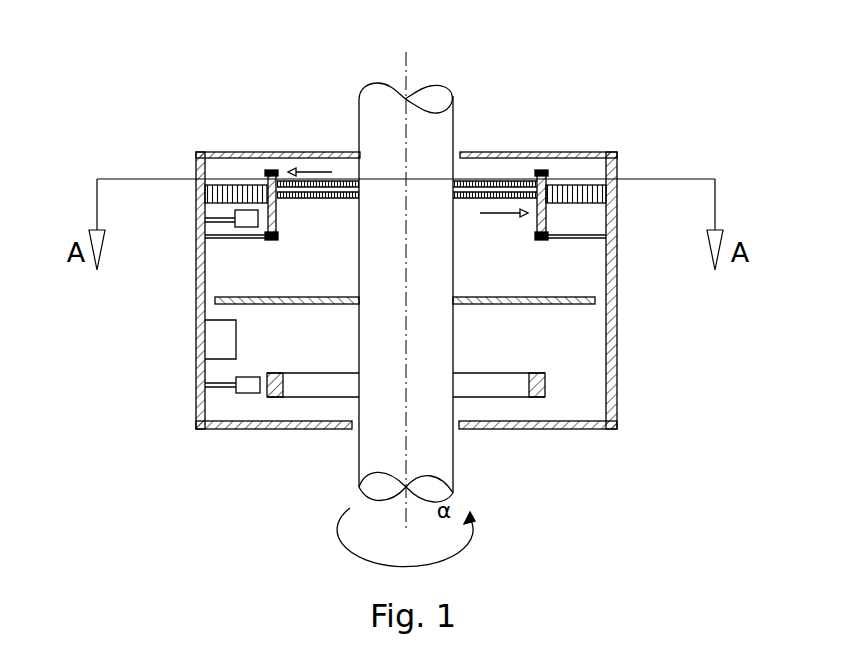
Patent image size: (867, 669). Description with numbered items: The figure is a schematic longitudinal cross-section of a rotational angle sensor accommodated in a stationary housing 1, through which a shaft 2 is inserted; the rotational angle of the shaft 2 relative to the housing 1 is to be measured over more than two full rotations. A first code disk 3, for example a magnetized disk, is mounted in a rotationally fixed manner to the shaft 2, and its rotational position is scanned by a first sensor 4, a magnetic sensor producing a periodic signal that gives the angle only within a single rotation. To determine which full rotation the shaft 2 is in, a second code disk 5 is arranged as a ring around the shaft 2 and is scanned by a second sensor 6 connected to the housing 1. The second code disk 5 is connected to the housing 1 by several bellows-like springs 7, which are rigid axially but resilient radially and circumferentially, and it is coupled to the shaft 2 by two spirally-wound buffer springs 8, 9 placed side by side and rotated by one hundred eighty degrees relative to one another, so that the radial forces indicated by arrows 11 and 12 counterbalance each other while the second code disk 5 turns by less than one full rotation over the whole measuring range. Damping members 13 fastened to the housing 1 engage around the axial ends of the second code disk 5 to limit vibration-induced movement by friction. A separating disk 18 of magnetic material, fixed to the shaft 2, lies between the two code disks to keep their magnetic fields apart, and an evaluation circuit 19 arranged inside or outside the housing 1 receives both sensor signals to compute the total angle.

The housing 1 is at (616, 360).
The shaft 2 is at (425, 97).
The first code disk 3 is at (545, 390).
The first sensor 4 is at (246, 392).
The second code disk 5 is at (548, 236).
The second sensor 6 is at (246, 218).
The springs 7 is at (230, 196).
The buffer spring 8 is at (475, 182).
The buffer spring 9 is at (516, 192).
The arrow 11 is at (299, 182).
The arrow 12 is at (509, 218).
The damping members 13 is at (268, 172).
The separating disk 18 is at (596, 300).
The evaluation circuit 19 is at (215, 343).